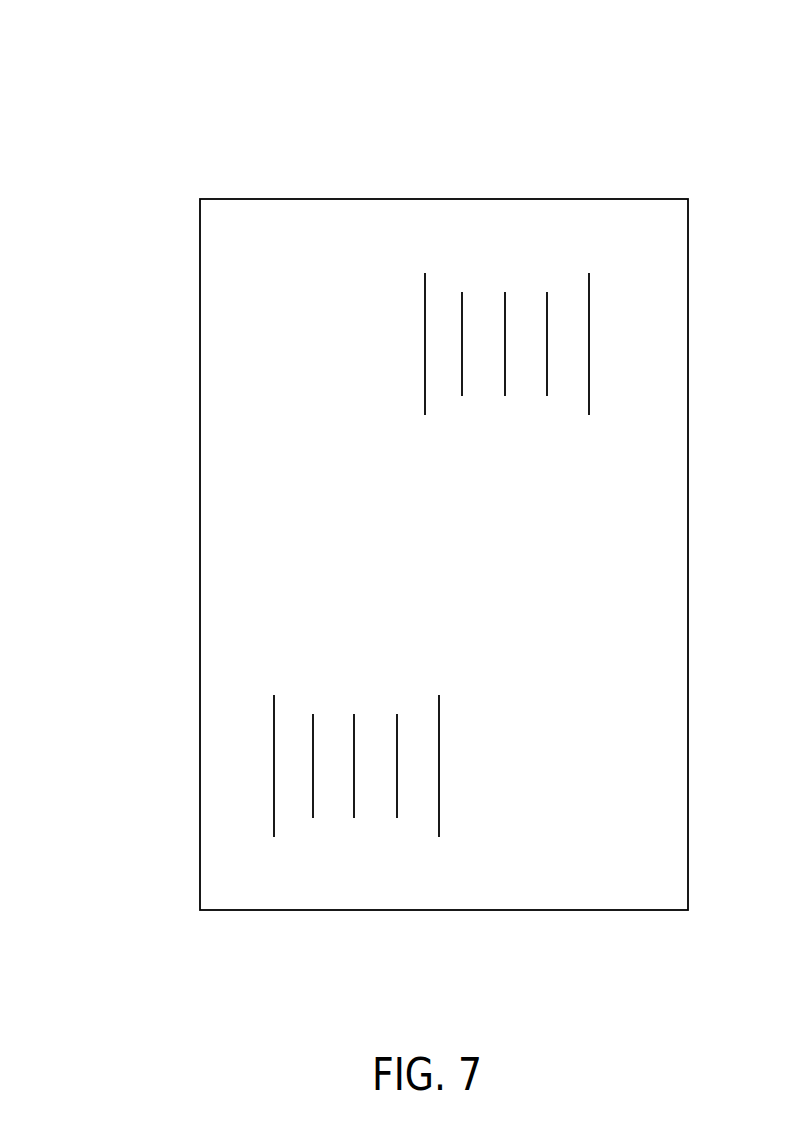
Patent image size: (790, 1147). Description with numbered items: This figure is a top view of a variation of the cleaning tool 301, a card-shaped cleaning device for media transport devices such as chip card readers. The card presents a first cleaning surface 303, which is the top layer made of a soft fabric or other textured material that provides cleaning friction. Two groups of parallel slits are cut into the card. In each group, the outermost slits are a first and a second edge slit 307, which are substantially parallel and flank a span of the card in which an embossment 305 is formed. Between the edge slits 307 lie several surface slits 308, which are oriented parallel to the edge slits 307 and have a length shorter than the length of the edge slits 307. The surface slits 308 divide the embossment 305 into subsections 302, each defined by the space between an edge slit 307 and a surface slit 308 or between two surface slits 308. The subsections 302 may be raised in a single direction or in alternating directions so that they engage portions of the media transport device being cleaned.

The cleaning tool 301 is at (185, 98).
The subsections 302 is at (425, 755).
The first cleaning surface 303 is at (238, 611).
The embossment 305 is at (524, 330).
The edge slit 307 is at (425, 320).
The surface slit 308 is at (462, 312).